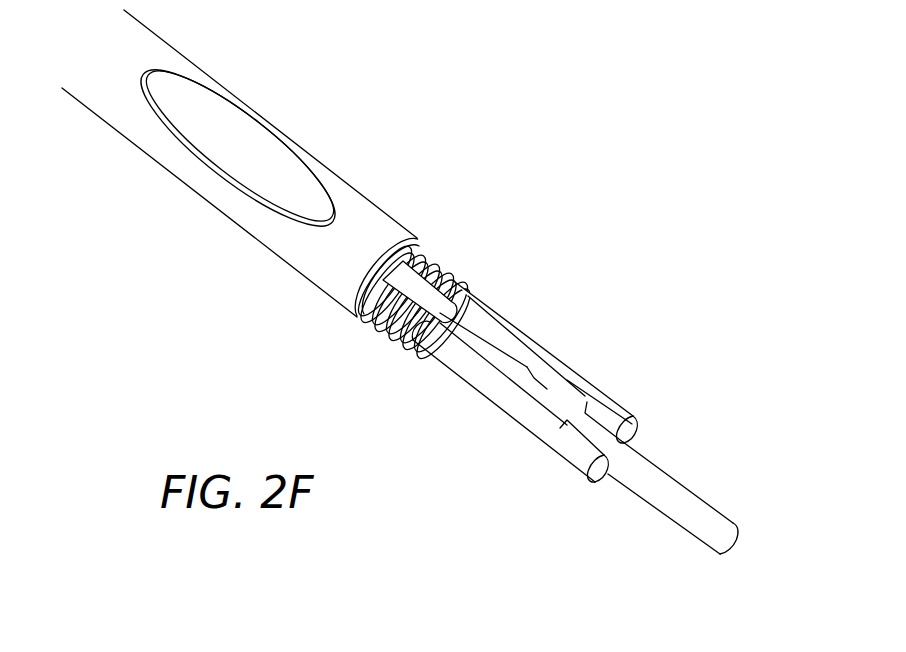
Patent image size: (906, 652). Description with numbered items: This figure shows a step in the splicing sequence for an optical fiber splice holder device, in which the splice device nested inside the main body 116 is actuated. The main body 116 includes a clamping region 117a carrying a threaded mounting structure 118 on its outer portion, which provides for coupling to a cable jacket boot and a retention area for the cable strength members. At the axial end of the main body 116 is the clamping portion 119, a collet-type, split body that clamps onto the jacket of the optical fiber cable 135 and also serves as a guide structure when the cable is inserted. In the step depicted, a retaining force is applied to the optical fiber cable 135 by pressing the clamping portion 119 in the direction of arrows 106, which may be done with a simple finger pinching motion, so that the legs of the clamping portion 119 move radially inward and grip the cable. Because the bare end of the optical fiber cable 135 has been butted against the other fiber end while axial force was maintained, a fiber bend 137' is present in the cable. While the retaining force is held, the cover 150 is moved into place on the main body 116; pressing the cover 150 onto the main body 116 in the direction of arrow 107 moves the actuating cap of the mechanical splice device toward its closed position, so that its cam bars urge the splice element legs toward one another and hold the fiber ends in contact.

The arrow 107 is at (237, 135).
The cover 150 is at (368, 213).
The main body 116 is at (265, 247).
The mounting structure 118 is at (390, 338).
The fiber bend 137' is at (475, 343).
The clamping portion 119 is at (608, 407).
The arrows 106 is at (640, 395).
The clamping region 117a is at (455, 410).
The optical fiber cable 135 is at (690, 490).